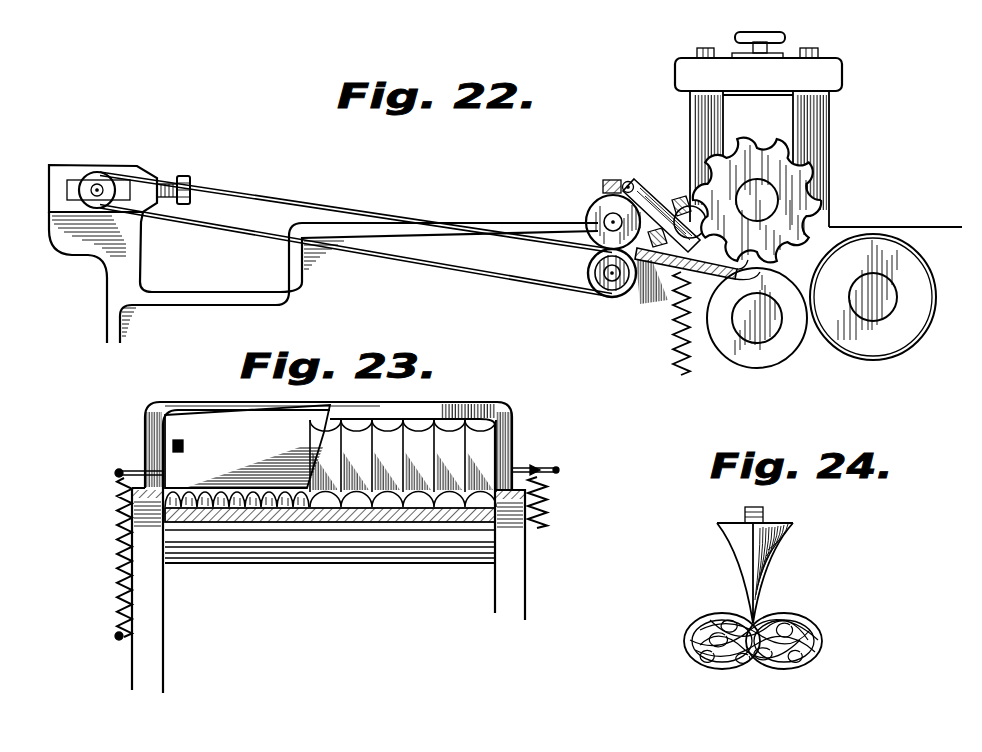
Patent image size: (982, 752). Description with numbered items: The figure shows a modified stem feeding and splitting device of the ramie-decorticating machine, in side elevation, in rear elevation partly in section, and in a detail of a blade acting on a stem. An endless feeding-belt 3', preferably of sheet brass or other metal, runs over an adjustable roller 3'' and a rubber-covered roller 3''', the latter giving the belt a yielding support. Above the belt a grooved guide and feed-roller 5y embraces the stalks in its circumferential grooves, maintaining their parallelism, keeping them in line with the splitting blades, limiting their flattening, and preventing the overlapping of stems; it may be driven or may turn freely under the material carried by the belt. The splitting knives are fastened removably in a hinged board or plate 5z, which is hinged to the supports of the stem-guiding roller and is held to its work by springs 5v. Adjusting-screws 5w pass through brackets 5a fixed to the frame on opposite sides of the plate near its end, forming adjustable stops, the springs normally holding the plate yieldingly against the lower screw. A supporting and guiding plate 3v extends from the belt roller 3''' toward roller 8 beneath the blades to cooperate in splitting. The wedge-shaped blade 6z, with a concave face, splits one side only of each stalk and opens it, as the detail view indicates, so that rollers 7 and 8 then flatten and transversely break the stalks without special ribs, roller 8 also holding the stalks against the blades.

In FIG. 22, the endless feeding-belt 3' is at (356, 230).
In FIG. 22, the adjustable roller 3'' is at (128, 176).
In FIG. 22, the rubber-covered roller 3''' is at (590, 273).
In FIG. 22, the pulley support block 3v is at (653, 270).
In FIG. 22, the bracket 5a is at (694, 210).
In FIG. 22, the spring 5v is at (672, 338).
In FIG. 23, the spring 5v is at (117, 522).
In FIG. 22, the adjusting-screw 5w is at (676, 206).
In FIG. 22, the grooved guide and feed-roller 5y is at (598, 210).
In FIG. 23, the grooved guide and feed-roller 5y is at (330, 463).
In FIG. 22, the hinged board or plate 5z is at (648, 175).
In FIG. 23, the hinged board or plate 5z is at (247, 446).
In FIG. 22, the blade / knife bar 6z is at (680, 246).
In FIG. 24, the blade / knife bar 6z is at (745, 562).
In FIG. 22, the roller 7 is at (812, 210).
In FIG. 22, the roller 8 is at (735, 350).